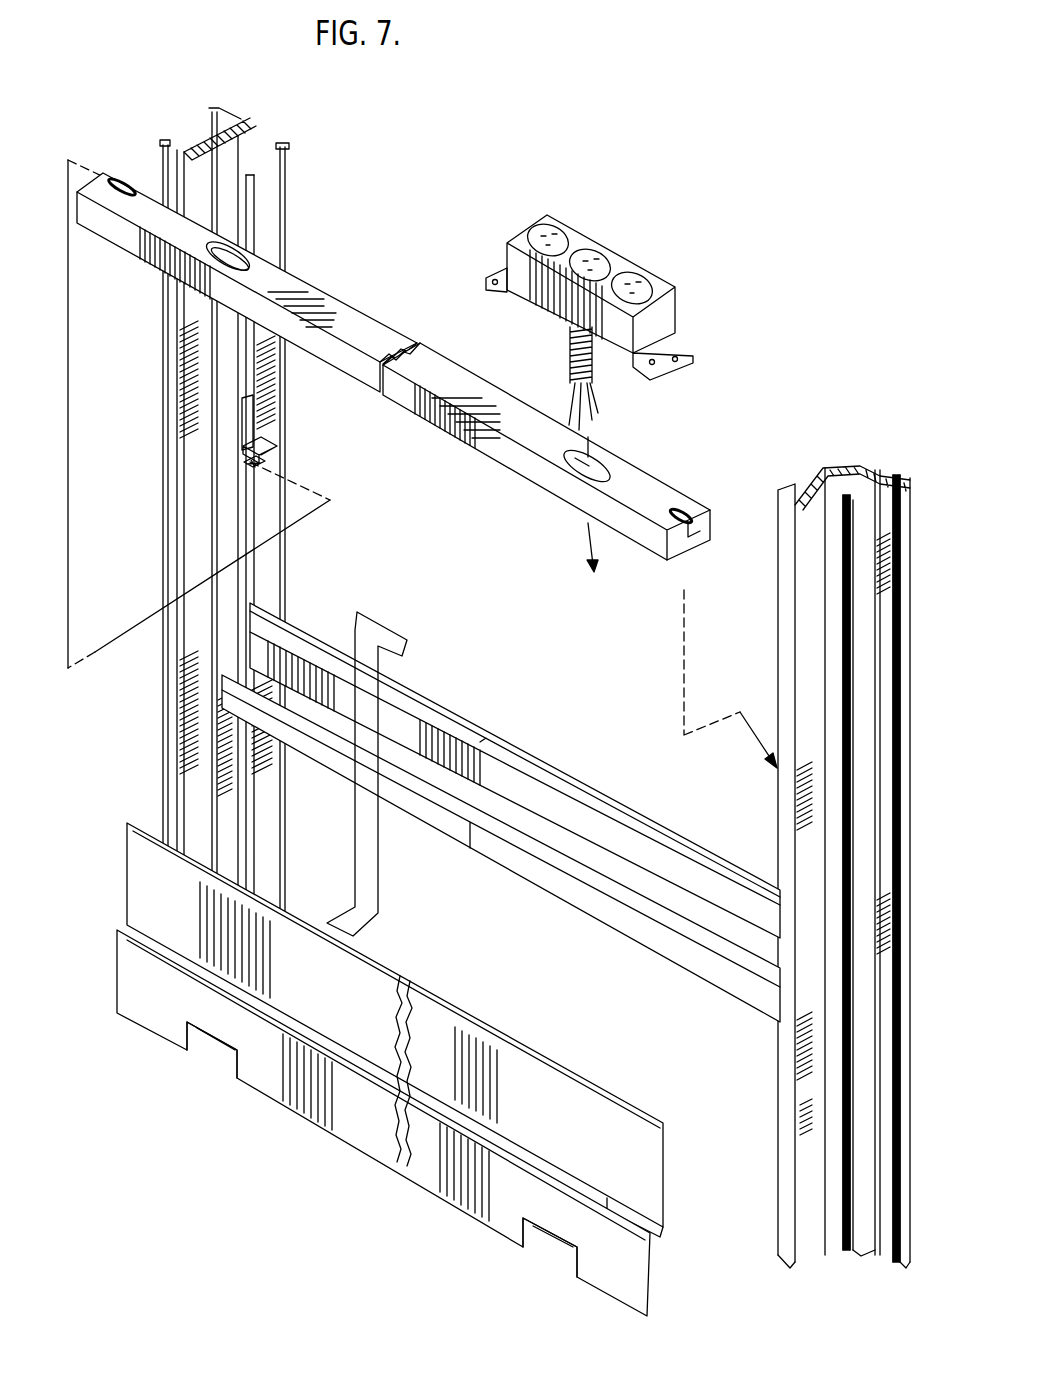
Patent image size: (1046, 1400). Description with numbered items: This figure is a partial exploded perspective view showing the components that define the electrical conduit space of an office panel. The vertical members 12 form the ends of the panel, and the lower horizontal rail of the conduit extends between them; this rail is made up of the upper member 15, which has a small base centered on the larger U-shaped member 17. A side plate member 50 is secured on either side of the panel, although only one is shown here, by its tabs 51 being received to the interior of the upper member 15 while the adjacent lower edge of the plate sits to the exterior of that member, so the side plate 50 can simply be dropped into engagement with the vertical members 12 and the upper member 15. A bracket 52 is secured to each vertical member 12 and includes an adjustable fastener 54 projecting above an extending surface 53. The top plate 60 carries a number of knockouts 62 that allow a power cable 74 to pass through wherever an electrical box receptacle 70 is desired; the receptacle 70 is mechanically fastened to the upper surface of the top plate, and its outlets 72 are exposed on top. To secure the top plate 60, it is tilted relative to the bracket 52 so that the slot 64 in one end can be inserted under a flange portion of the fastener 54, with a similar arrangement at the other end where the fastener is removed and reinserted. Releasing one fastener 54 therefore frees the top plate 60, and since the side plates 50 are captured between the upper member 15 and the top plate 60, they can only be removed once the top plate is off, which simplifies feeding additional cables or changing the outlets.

The vertical members 12 is at (268, 130).
The upper member 15 is at (555, 800).
The U-shaped member 17 is at (552, 876).
The side plate members 50 is at (585, 1100).
The tabs 51 is at (218, 1050).
The bracket 52 is at (256, 424).
The extending surface 53 is at (242, 465).
The adjustable fastener 54 is at (275, 448).
The top plate 60 is at (345, 305).
The knockouts 62 is at (250, 255).
The slot 64 is at (122, 178).
The electrical box receptacle 70 is at (670, 316).
The receptacle 72 is at (630, 280).
The power cable 74 is at (592, 370).